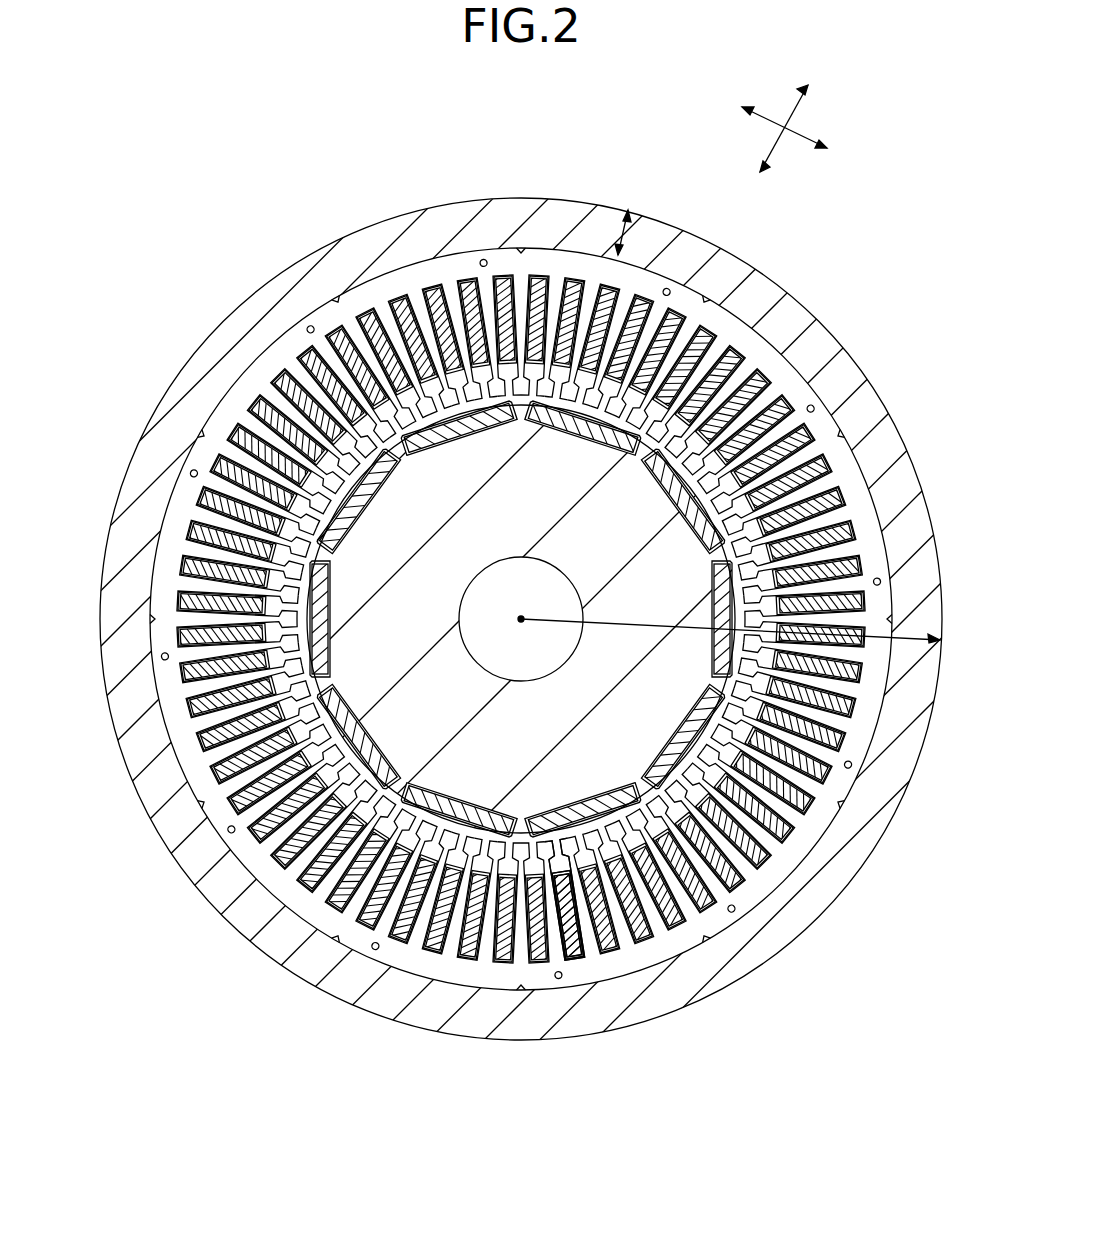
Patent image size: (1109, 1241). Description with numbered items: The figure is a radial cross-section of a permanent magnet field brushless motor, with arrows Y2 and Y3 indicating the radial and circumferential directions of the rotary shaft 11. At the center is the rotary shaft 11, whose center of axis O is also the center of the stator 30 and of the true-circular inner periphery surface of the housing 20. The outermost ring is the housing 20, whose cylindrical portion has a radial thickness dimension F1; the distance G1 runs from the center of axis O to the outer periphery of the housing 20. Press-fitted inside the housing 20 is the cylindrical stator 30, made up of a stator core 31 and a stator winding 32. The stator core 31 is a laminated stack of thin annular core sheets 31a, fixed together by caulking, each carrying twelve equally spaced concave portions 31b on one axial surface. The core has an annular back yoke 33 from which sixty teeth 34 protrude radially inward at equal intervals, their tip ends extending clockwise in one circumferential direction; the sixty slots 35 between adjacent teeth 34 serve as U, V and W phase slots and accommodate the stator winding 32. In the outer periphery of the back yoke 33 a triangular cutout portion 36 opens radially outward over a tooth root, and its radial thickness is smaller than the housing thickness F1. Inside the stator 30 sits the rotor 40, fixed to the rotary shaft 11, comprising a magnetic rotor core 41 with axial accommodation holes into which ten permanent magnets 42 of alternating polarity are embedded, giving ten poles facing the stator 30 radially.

The rotary shaft 11 is at (328, 562).
The housing 20 is at (600, 715).
The stator 30 is at (521, 675).
The stator core 31 is at (521, 996).
The core sheet 31a is at (521, 619).
The concave portion 31b is at (521, 567).
The stator winding 32 is at (545, 240).
The back yoke 33 is at (479, 975).
The teeth 34 is at (561, 611).
The slots 35 is at (494, 263).
The cutout portion 36 is at (521, 592).
The rotor 40 is at (453, 724).
The rotor core 41 is at (498, 714).
The permanent magnet 42 is at (546, 700).
The center of axis O is at (529, 649).
The distance from center of axis to outer periphery of housing G1 is at (755, 665).
The thickness dimension of housing F1 is at (640, 205).
The arrow indicating radial direction Y2 is at (773, 144).
The arrow indicating circumferential direction Y3 is at (803, 137).